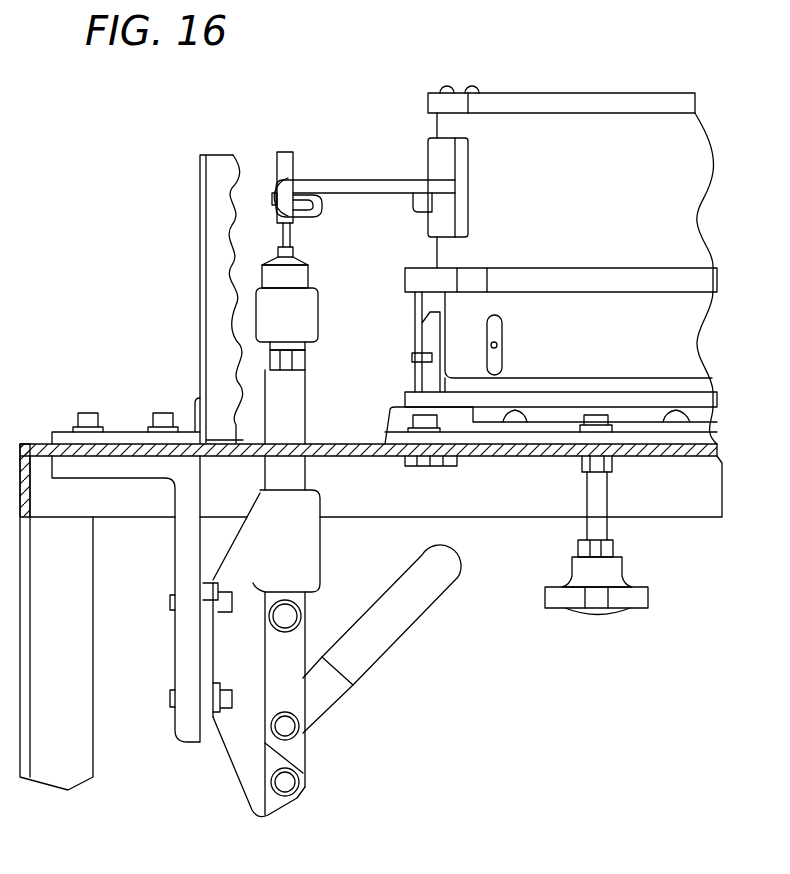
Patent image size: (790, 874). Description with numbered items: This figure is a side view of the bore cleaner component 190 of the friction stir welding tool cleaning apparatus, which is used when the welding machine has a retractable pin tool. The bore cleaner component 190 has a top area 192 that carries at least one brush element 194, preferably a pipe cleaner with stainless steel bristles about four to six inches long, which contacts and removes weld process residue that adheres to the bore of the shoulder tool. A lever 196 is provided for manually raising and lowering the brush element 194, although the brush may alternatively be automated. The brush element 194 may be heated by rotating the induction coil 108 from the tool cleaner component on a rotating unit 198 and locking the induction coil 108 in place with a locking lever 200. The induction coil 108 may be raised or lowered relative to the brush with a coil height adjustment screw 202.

The induction coil 108 is at (355, 178).
The bore cleaner component 190 is at (238, 665).
The top area 192 is at (262, 283).
The brush element 194 is at (287, 148).
The lever 196 is at (410, 630).
The rotating unit 198 is at (442, 400).
The locking lever 200 is at (407, 358).
The coil height adjustment screw 202 is at (598, 612).